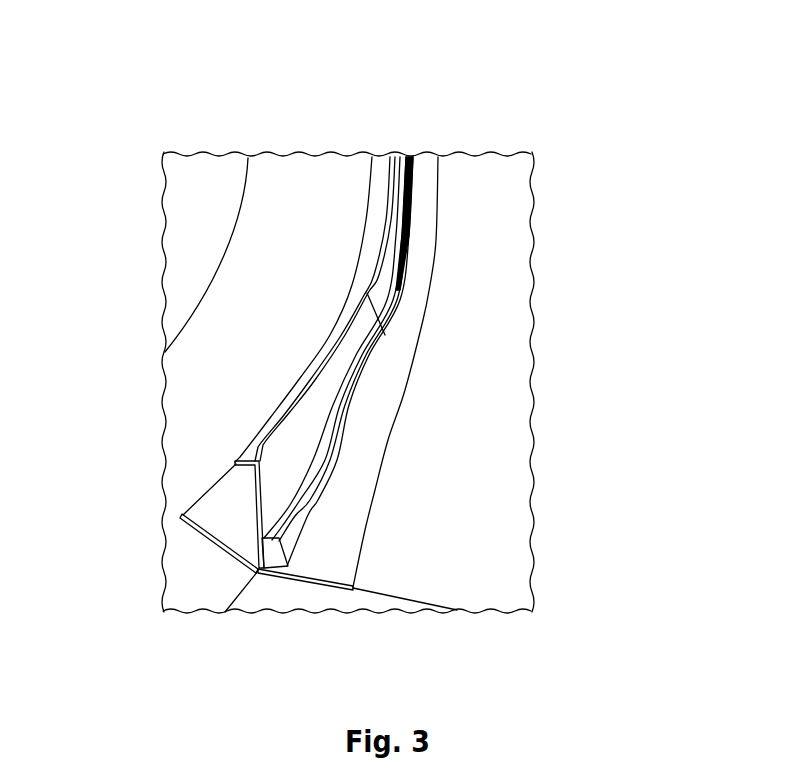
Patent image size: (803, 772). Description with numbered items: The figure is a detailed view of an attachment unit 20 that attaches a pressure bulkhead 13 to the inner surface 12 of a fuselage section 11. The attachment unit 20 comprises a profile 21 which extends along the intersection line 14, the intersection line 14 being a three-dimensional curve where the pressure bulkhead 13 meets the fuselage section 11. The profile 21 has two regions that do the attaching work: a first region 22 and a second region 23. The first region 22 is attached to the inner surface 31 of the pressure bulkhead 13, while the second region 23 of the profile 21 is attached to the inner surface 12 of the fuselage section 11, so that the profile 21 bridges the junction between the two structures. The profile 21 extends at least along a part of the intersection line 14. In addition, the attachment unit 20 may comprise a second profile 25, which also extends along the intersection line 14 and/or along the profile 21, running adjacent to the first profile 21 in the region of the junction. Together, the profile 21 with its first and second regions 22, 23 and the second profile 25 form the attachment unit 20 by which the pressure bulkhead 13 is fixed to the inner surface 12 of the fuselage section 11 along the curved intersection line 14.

The fuselage section 11 is at (498, 268).
The inner surface of the fuselage section 12 is at (485, 182).
The pressure bulkhead 13 is at (202, 373).
The intersection line 14 is at (242, 592).
The attachment unit 20 is at (410, 148).
The profile 21 is at (353, 482).
The first region 22 is at (213, 541).
The second region 23 is at (320, 588).
The second profile 25 is at (352, 345).
The inner surface of the pressure bulkhead 31 is at (280, 187).